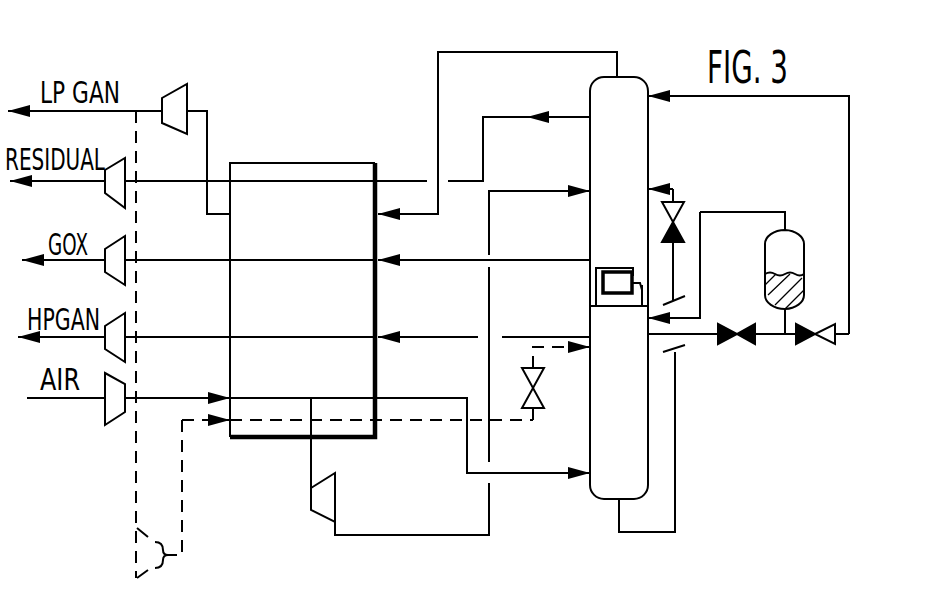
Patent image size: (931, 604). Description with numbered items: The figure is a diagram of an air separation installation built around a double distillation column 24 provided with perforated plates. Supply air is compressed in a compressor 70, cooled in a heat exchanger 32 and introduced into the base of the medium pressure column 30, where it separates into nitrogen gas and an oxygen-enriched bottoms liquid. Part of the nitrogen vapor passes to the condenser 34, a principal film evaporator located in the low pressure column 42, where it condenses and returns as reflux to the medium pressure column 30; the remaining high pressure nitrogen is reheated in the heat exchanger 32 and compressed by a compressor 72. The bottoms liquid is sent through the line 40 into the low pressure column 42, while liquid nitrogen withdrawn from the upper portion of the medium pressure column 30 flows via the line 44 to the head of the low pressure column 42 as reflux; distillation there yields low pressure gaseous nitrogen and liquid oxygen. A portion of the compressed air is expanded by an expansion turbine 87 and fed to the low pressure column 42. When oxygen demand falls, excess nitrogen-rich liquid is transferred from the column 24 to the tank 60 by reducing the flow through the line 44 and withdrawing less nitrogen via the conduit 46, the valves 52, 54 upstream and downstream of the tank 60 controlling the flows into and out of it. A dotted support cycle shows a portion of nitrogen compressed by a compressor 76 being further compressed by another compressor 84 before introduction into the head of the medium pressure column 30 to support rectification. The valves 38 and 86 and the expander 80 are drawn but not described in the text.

The double distillation column 24 is at (580, 182).
The medium pressure column 30 is at (603, 500).
The heat exchanger 32 is at (270, 163).
The condenser 34 is at (619, 251).
The valve 38 is at (683, 215).
The line 40 is at (676, 373).
The low pressure column 42 is at (648, 153).
The line 44 is at (848, 128).
The conduit 46 is at (537, 52).
The valve 52 is at (742, 345).
The valve 54 is at (815, 345).
The tank 60 is at (807, 262).
The compressor 70 is at (112, 418).
The compressor 72 is at (125, 328).
The compressor 76 is at (168, 128).
The expansion turbine 80 is at (118, 240).
The compressor 84 is at (160, 568).
The control valve 86 is at (534, 376).
The expansion turbine 87 is at (337, 500).